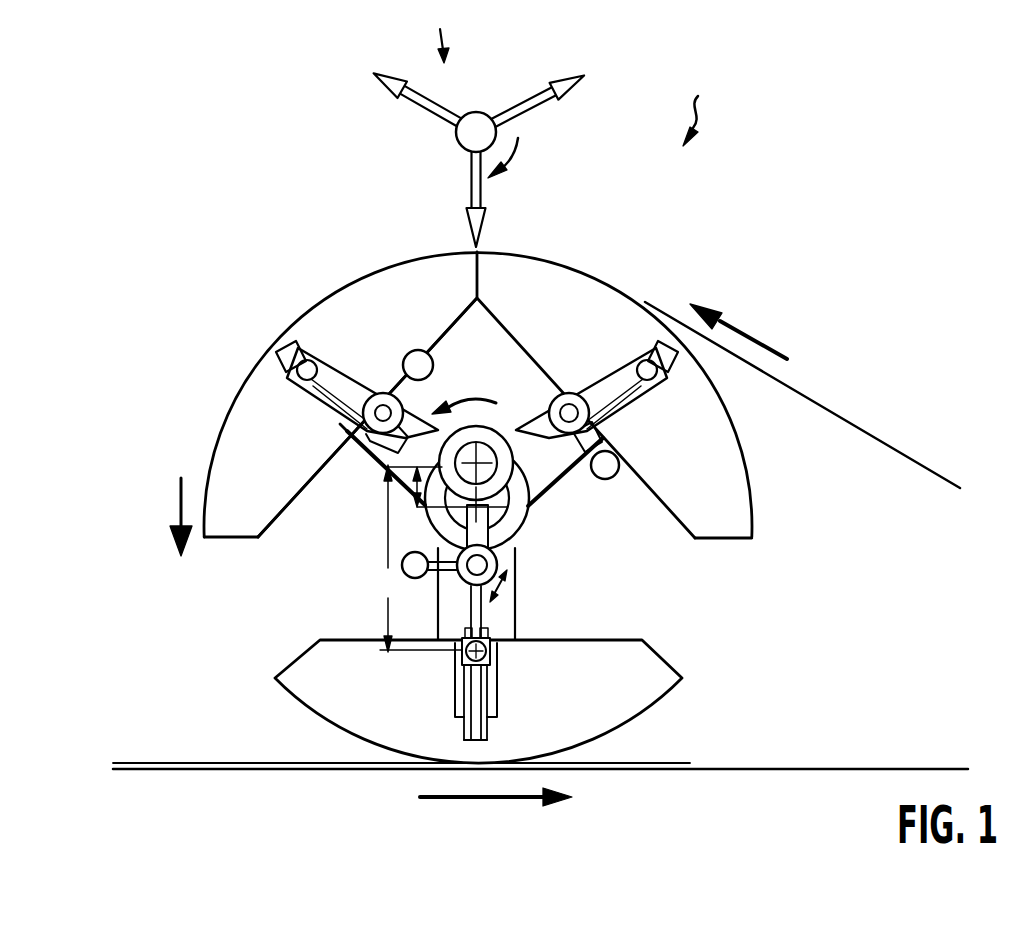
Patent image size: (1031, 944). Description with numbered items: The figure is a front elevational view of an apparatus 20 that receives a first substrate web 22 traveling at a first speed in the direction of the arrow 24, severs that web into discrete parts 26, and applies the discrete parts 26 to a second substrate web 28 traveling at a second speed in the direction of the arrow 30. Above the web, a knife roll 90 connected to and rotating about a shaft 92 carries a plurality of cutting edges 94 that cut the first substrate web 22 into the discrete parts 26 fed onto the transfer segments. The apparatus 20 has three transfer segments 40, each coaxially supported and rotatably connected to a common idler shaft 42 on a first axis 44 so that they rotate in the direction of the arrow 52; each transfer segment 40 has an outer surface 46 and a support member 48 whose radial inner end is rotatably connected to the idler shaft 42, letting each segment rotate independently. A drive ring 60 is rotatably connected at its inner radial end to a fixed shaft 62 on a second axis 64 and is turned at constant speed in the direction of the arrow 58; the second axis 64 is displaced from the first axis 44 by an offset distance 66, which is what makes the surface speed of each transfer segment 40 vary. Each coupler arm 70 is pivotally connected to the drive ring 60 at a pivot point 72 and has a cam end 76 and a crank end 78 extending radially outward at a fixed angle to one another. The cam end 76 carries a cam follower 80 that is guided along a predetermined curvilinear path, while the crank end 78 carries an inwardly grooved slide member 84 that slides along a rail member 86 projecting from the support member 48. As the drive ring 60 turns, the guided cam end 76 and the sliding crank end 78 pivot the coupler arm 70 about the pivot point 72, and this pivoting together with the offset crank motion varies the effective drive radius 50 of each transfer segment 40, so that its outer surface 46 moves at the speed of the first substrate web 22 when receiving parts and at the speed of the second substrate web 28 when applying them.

The apparatus 20 is at (703, 110).
The first substrate web 22 is at (832, 410).
The arrow 24 is at (762, 345).
The discrete parts 26 is at (673, 763).
The second substrate web 28 is at (753, 771).
The arrow 30 is at (493, 806).
The transfer segment 40 is at (493, 508).
The idler shaft 42 is at (507, 513).
The first axis 44 is at (481, 508).
The outer surface 46 is at (212, 450).
The support member 48 is at (366, 468).
The effective drive radius 50 is at (418, 558).
The arrow 52 is at (178, 500).
The arrow 58 is at (478, 400).
The drive ring 60 is at (504, 425).
The fixed shaft 62 is at (501, 456).
The second axis 64 is at (478, 464).
The offset distance 66 is at (418, 500).
The coupler arm 70 is at (384, 393).
The pivot point 72 is at (348, 431).
The cam end 76 is at (419, 351).
The crank end 78 is at (315, 360).
The cam follower 80 is at (406, 354).
The slide member 84 is at (294, 380).
The rail member 86 is at (284, 348).
The knife roll 90 is at (440, 33).
The shaft 92 is at (482, 112).
The cutting edges 94 is at (580, 76).